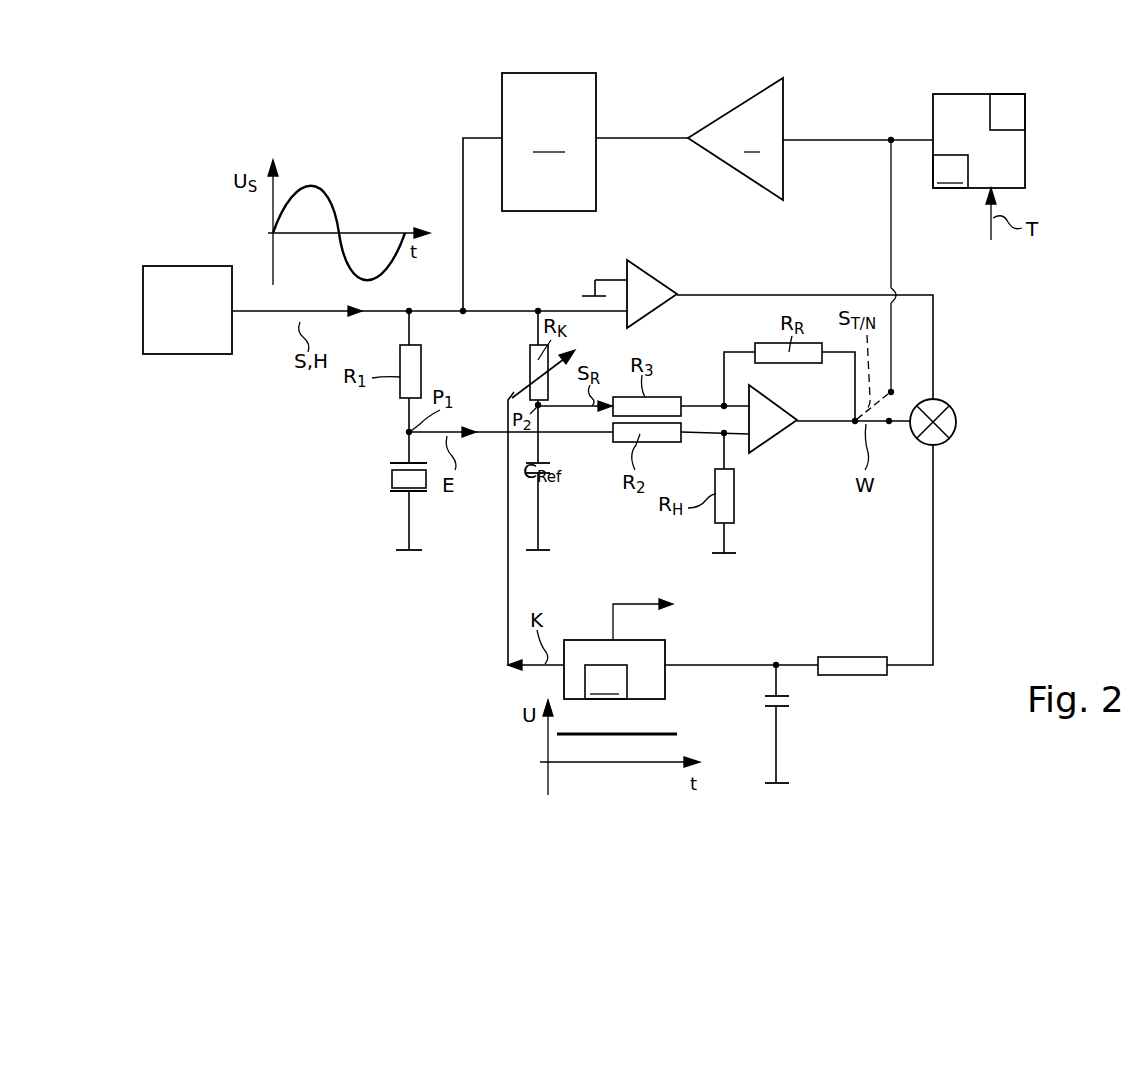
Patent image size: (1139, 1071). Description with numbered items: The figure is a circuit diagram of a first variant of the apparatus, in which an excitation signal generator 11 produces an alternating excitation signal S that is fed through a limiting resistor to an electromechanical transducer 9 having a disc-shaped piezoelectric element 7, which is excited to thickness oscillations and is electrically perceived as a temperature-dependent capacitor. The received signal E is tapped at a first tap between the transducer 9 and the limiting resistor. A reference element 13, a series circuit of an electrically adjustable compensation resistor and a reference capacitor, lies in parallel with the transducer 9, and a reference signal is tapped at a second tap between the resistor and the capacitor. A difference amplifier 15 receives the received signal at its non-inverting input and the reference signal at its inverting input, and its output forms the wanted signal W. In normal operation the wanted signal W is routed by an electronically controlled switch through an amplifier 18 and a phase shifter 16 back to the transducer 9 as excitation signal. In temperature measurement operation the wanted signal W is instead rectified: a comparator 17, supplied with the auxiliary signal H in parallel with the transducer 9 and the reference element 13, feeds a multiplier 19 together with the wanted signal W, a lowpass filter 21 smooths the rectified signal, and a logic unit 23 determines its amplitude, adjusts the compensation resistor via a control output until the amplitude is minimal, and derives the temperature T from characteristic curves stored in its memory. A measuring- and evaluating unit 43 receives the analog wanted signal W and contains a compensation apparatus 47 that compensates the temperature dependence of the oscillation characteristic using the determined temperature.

The piezoelectric element 7 is at (398, 478).
The electromechanical transducer 9 is at (370, 430).
The excitation signal generator 11 is at (200, 323).
The reference element 13 is at (498, 378).
The difference amplifier 15 is at (785, 446).
The phase shifter 16 is at (572, 88).
The comparator 17 is at (649, 270).
The amplifier 18 is at (775, 88).
The multiplier 19 is at (938, 433).
The lowpass filter 21 is at (830, 709).
The logic unit 23 is at (597, 660).
The measuring- and evaluating unit 43 is at (975, 137).
The compensation apparatus 47 is at (1019, 122).